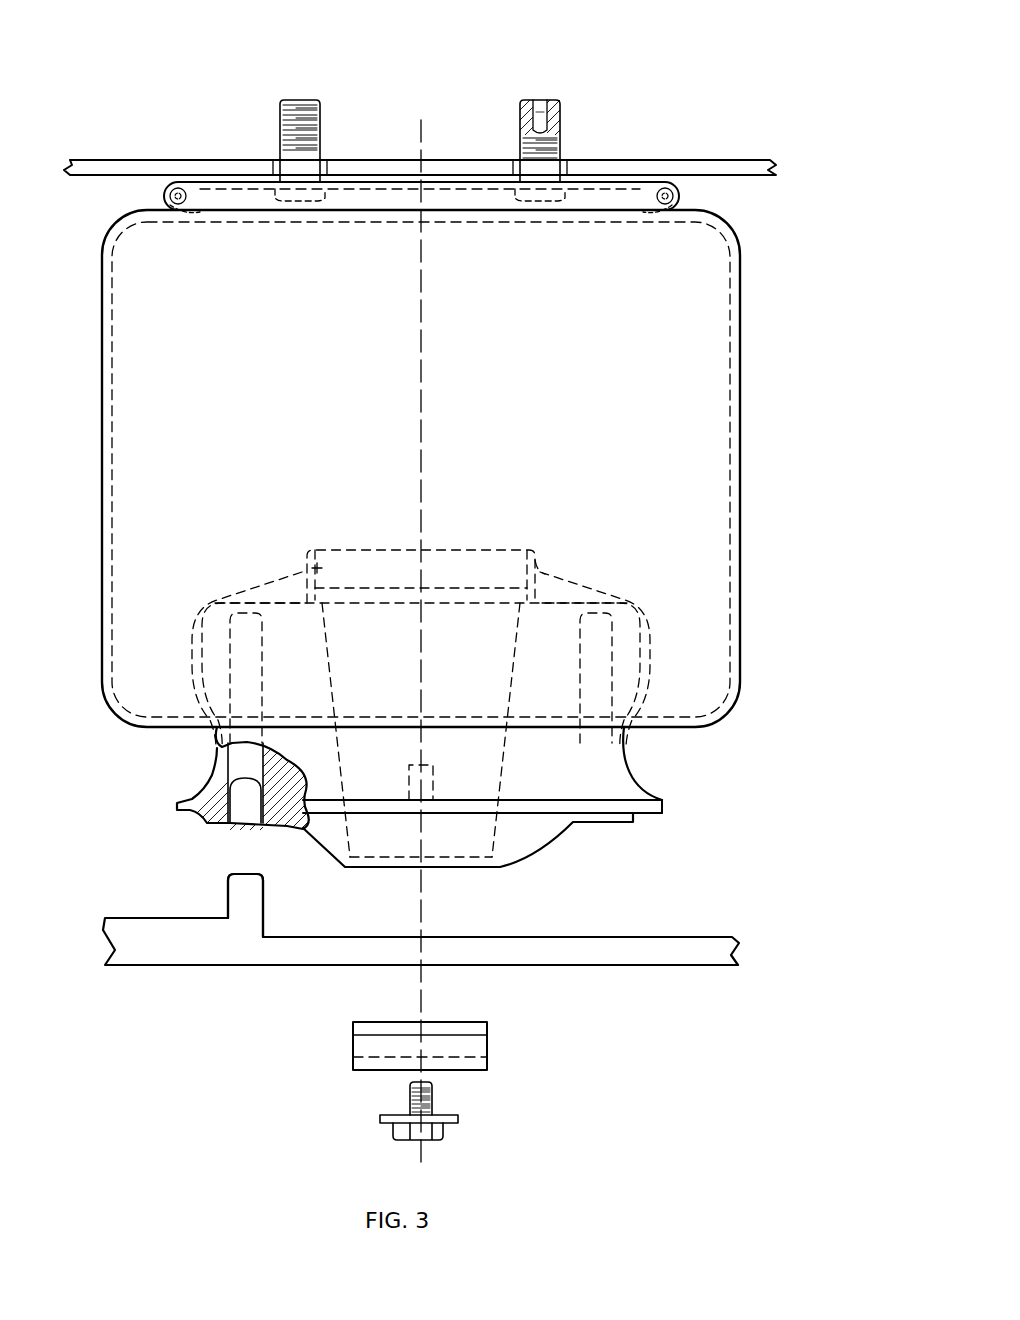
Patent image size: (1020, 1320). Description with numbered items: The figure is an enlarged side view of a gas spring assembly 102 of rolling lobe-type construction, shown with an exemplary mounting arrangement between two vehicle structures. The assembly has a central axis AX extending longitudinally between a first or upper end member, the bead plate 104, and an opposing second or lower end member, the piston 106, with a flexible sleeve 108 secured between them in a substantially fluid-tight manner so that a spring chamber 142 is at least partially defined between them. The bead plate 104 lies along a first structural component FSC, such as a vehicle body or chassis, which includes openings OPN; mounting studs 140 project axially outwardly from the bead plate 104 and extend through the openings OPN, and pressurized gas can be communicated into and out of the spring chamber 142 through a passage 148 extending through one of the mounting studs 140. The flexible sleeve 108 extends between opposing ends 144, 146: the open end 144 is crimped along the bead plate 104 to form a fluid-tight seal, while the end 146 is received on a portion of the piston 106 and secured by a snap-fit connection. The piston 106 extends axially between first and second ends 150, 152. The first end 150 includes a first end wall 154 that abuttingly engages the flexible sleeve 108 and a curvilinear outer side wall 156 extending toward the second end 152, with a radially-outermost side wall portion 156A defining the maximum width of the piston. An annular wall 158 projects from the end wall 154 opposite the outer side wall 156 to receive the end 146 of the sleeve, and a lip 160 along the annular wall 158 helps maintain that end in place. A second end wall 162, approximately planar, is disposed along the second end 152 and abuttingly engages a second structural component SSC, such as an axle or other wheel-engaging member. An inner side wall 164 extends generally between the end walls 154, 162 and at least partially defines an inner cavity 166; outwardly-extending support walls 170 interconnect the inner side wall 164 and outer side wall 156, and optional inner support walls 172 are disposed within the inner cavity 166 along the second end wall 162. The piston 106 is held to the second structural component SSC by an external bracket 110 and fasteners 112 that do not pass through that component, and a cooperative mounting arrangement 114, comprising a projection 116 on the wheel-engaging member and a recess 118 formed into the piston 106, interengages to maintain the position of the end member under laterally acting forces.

The gas spring assembly 102 is at (788, 256).
The bead plate 104 is at (645, 180).
The piston 106 is at (711, 786).
The flexible sleeve 108 is at (740, 532).
The bracket 110 is at (487, 1045).
The fasteners 112 is at (442, 1130).
The cooperative mounting arrangement 114 is at (132, 822).
The projection 116 is at (250, 897).
The recess 118 is at (232, 793).
The mounting studs 140 is at (305, 100).
The spring chamber 142 is at (705, 416).
The end 144 is at (222, 242).
The end 146 is at (253, 557).
The passage 148 is at (546, 93).
The first end 150 is at (476, 516).
The second end 152 is at (566, 852).
The first end wall 154 is at (570, 600).
The outer side wall 156 is at (628, 770).
The radially-outermost side wall portion 156A is at (663, 806).
The annular wall 158 is at (322, 568).
The lip 160 is at (537, 570).
The second end wall 162 is at (468, 868).
The inner side wall 164 is at (330, 672).
The inner cavity 166 is at (461, 629).
The support walls 170 is at (265, 822).
The inner support walls 172 is at (440, 790).
The central axis AX is at (421, 352).
The first structural component FSC is at (180, 160).
The second structural component SSC is at (620, 965).
The openings OPN is at (275, 160).